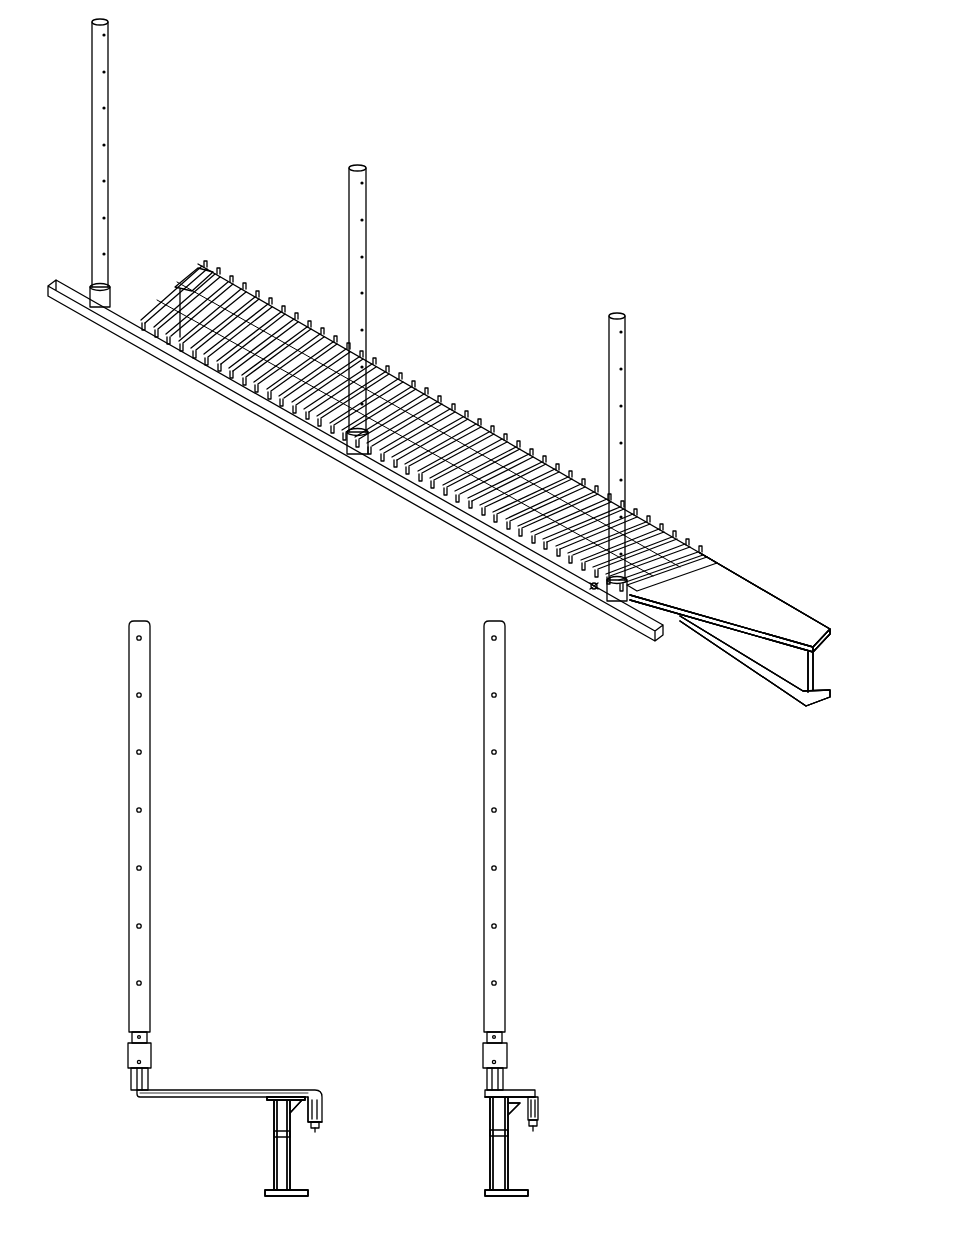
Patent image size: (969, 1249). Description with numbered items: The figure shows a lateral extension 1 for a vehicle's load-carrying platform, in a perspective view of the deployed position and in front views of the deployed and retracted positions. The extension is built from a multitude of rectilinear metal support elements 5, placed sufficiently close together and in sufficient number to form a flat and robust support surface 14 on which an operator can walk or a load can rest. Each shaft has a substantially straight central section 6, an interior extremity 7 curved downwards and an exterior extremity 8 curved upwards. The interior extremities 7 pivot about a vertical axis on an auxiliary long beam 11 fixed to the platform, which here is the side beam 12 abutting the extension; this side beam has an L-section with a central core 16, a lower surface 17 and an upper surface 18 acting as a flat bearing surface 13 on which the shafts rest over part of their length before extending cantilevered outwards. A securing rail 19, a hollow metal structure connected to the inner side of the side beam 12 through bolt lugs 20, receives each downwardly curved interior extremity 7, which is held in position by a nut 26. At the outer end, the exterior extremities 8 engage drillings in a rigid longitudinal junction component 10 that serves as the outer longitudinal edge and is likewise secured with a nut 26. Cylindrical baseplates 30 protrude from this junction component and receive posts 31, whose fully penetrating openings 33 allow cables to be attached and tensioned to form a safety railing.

In FIG. 3, the lateral extension 1 is at (128, 395).
In FIG. 4, the lateral extension 1 is at (274, 962).
In FIG. 5, the lateral extension 1 is at (590, 962).
In FIG. 3, the rectilinear individual support elements 5 is at (226, 335).
In FIG. 4, the rectilinear individual support elements 5 is at (251, 1086).
In FIG. 5, the rectilinear individual support elements 5 is at (535, 1087).
In FIG. 4, the central section 6 is at (184, 1097).
In FIG. 4, the interior extremity 7 is at (308, 1100).
In FIG. 5, the interior extremity 7 is at (546, 1112).
In FIG. 4, the exterior extremity 8 is at (152, 1065).
In FIG. 5, the exterior extremity 8 is at (500, 1078).
In FIG. 3, the rigid longitudinal junction component 10 is at (262, 407).
In FIG. 4, the rigid longitudinal junction component 10 is at (120, 1080).
In FIG. 5, the rigid longitudinal junction component 10 is at (480, 1076).
In FIG. 3, the auxiliary long beam 11 is at (724, 558).
In FIG. 4, the auxiliary long beam 11 is at (264, 1150).
In FIG. 5, the auxiliary long beam 11 is at (480, 1150).
In FIG. 3, the side beam 12 is at (730, 629).
In FIG. 4, the side beam 12 is at (286, 1146).
In FIG. 5, the side beam 12 is at (506, 1146).
In FIG. 3, the flat bearing surface 13 is at (757, 598).
In FIG. 4, the flat bearing surface 13 is at (268, 1099).
In FIG. 5, the flat bearing surface 13 is at (490, 1098).
In FIG. 3, the support surface 14 is at (154, 291).
In FIG. 4, the support surface 14 is at (227, 1070).
In FIG. 3, the central core 16 is at (742, 650).
In FIG. 4, the central core 16 is at (291, 1168).
In FIG. 5, the central core 16 is at (511, 1168).
In FIG. 3, the lower surface 17 is at (823, 707).
In FIG. 4, the lower surface 17 is at (281, 1197).
In FIG. 5, the lower surface 17 is at (508, 1197).
In FIG. 3, the upper surface 18 is at (730, 602).
In FIG. 4, the upper surface 18 is at (286, 1098).
In FIG. 4, the securing rail 19 is at (325, 1105).
In FIG. 5, the securing rail 19 is at (545, 1106).
In FIG. 4, the bolt lugs 20 is at (290, 1140).
In FIG. 5, the bolt lugs 20 is at (510, 1140).
In FIG. 3, the nut 26 is at (593, 590).
In FIG. 4, the nut 26 is at (321, 1126).
In FIG. 5, the nut 26 is at (541, 1126).
In FIG. 3, the baseplates 30 is at (94, 299).
In FIG. 4, the baseplates 30 is at (133, 1052).
In FIG. 5, the baseplates 30 is at (487, 1052).
In FIG. 3, the posts 31 is at (102, 92).
In FIG. 4, the posts 31 is at (129, 836).
In FIG. 5, the posts 31 is at (484, 836).
In FIG. 3, the fully penetrating openings 33 is at (105, 142).
In FIG. 4, the fully penetrating openings 33 is at (142, 695).
In FIG. 5, the fully penetrating openings 33 is at (497, 752).